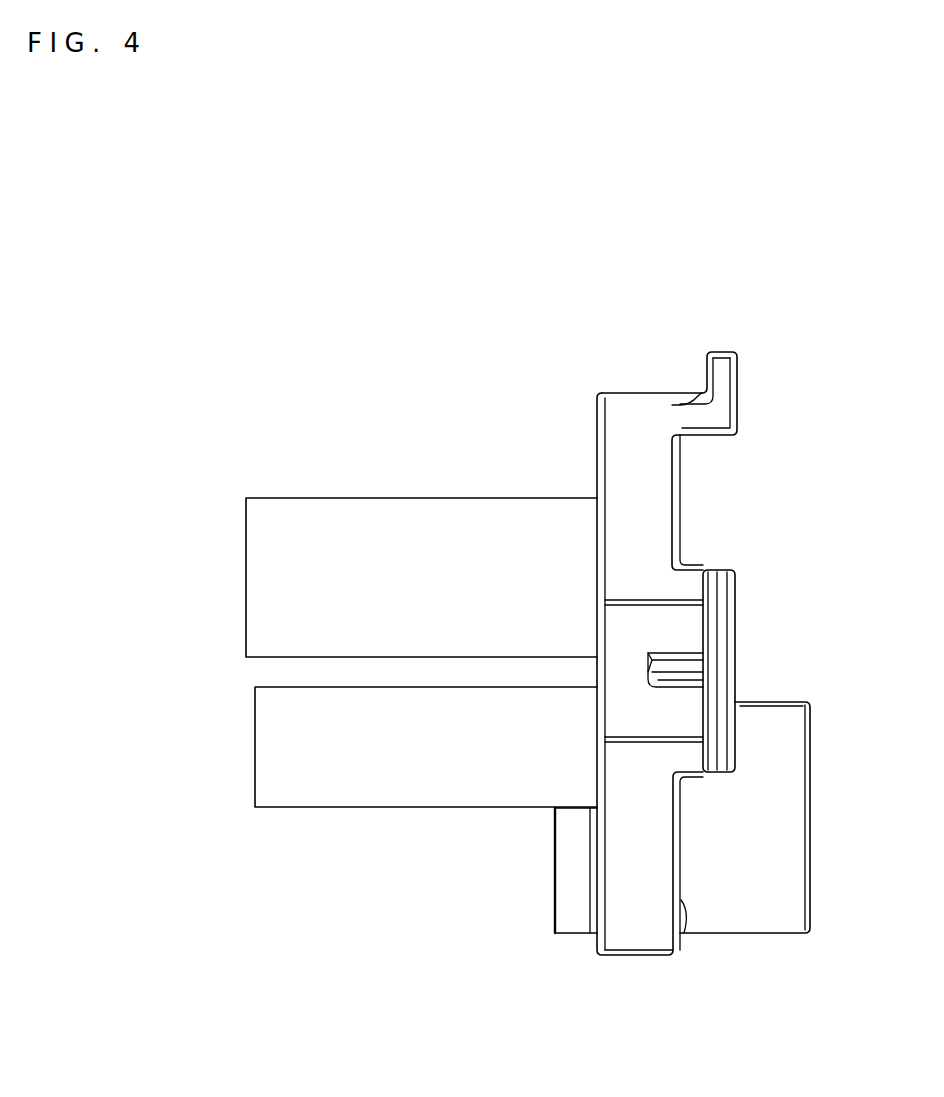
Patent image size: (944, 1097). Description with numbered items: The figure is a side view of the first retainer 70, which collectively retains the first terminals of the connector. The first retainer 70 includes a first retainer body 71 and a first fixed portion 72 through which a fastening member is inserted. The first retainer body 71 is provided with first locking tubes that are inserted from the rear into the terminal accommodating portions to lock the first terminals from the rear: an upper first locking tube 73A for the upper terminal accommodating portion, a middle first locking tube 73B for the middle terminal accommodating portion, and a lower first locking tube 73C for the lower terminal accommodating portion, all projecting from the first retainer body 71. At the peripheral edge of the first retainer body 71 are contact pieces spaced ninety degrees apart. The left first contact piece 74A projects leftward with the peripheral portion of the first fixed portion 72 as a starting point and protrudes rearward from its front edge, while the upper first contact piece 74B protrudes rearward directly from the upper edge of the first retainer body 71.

The first retainer 70 is at (551, 289).
The first retainer body 71 is at (655, 500).
The first fixed portion 72 is at (680, 635).
The upper first locking tube 73A is at (430, 522).
The middle first locking tube 73B is at (383, 785).
The lower first locking tube 73C is at (570, 902).
The left first contact piece 74A is at (727, 697).
The upper first contact piece 74B is at (720, 360).